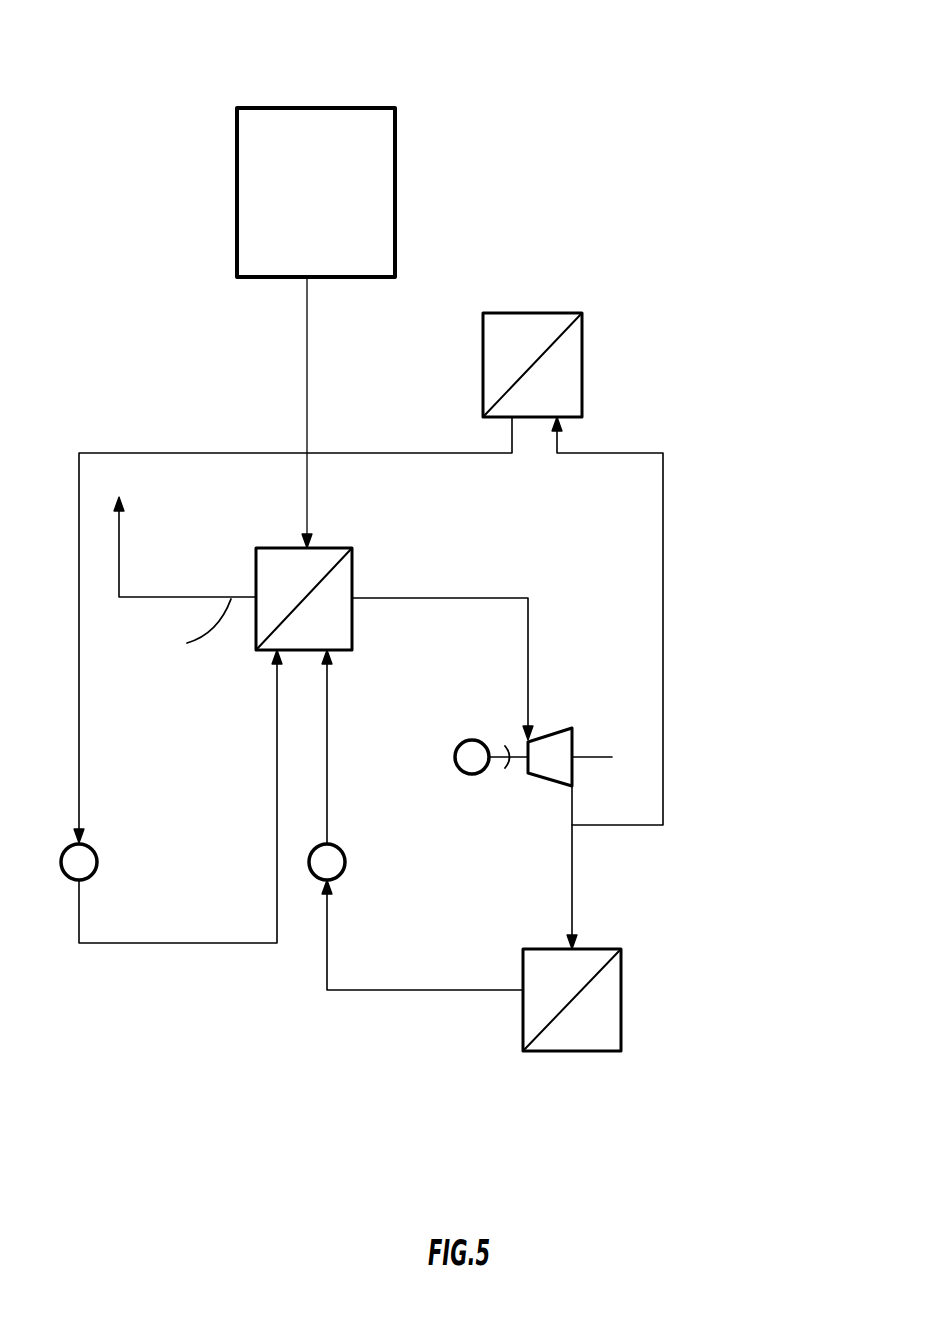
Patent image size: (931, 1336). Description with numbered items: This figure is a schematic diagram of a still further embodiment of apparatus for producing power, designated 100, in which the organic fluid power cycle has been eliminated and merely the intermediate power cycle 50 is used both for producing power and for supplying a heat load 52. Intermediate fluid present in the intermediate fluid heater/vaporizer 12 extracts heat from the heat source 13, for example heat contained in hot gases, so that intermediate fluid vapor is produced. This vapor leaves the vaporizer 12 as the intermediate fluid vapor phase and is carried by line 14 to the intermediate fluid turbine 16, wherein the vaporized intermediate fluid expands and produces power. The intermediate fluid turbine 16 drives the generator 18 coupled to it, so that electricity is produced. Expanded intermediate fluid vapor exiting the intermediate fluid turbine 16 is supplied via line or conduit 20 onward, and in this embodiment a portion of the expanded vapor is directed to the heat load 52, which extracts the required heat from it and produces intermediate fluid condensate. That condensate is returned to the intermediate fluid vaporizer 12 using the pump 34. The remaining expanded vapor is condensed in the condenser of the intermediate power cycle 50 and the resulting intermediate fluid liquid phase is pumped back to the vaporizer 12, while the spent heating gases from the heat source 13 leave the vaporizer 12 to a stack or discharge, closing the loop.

The power generating system 100 is at (148, 40).
The heat source 13 is at (333, 278).
The heat load 52 is at (505, 313).
The intermediate fluid heater/vaporizer 12 is at (279, 548).
The intermediate fluid vapor line 14 is at (527, 637).
The intermediate fluid turbine 16 is at (553, 728).
The generator 18 is at (460, 774).
The line or conduit 20 is at (571, 862).
The pump 34 is at (97, 862).
The intermediate power cycle 50 is at (447, 977).